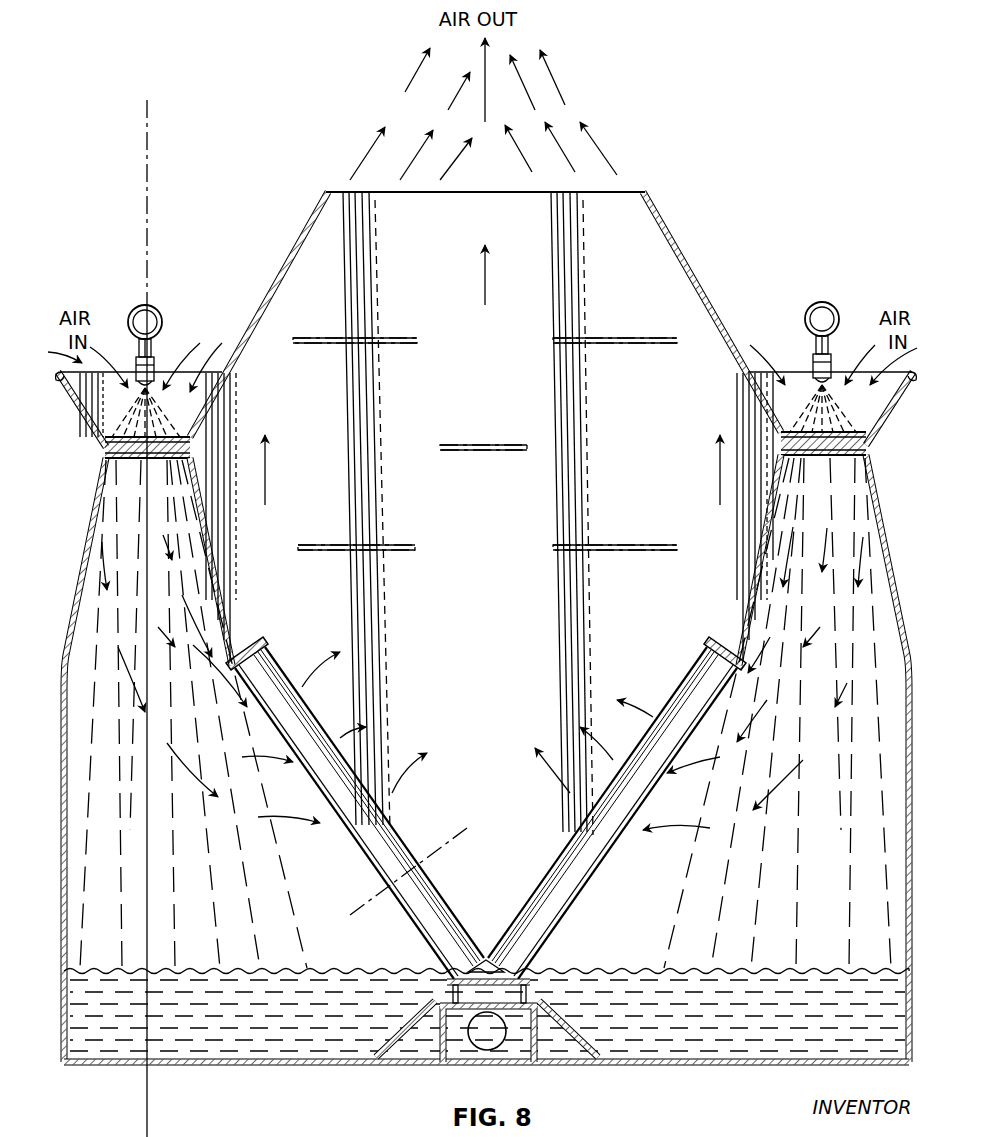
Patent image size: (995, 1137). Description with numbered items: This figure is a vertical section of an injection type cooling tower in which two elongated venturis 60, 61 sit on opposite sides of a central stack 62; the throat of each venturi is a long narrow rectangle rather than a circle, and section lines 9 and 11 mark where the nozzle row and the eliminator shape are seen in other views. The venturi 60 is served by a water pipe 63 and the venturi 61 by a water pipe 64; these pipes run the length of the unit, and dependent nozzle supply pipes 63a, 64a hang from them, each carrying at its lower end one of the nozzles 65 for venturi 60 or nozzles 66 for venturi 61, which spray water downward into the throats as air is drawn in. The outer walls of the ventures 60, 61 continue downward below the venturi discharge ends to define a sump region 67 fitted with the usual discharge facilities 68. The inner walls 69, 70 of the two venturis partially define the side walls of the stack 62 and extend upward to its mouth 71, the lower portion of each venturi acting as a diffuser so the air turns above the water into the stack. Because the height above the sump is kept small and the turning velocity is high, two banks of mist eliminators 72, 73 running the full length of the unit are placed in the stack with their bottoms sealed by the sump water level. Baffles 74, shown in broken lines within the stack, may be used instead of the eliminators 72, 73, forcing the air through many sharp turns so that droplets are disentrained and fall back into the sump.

The section line 9- 9 is at (190, 128).
The section line 11- 11 is at (463, 866).
The venturi 60 is at (98, 488).
The venturi 61 is at (885, 488).
The central stack 62 is at (697, 273).
The water pipe 63 is at (139, 306).
The nozzle supply pipe 63a is at (152, 352).
The water pipe 64 is at (824, 300).
The nozzle supply pipe 64a is at (813, 350).
The nozzle 65 is at (158, 372).
The nozzle 66 is at (832, 370).
The sump region 67 is at (302, 1040).
The discharge facilities 68 is at (453, 1053).
The inner wall 69 is at (210, 560).
The inner wall 70 is at (750, 583).
The mouth 71 is at (613, 207).
The mist eliminator 72 is at (435, 903).
The mist eliminator 73 is at (583, 843).
The baffle 74 is at (395, 338).